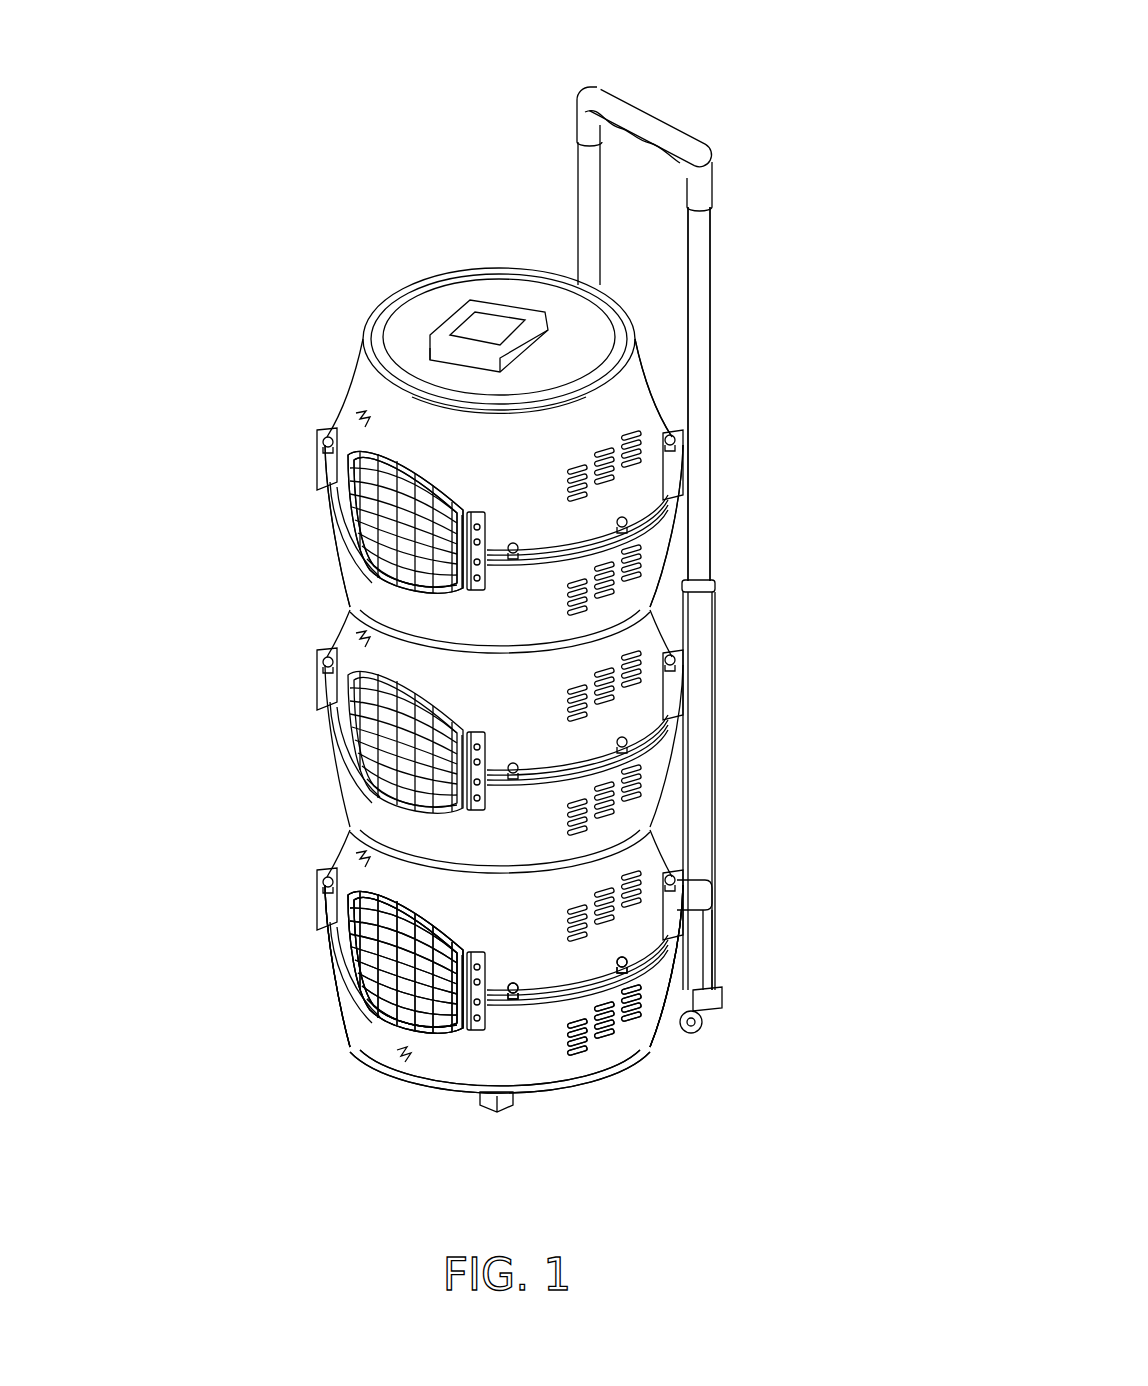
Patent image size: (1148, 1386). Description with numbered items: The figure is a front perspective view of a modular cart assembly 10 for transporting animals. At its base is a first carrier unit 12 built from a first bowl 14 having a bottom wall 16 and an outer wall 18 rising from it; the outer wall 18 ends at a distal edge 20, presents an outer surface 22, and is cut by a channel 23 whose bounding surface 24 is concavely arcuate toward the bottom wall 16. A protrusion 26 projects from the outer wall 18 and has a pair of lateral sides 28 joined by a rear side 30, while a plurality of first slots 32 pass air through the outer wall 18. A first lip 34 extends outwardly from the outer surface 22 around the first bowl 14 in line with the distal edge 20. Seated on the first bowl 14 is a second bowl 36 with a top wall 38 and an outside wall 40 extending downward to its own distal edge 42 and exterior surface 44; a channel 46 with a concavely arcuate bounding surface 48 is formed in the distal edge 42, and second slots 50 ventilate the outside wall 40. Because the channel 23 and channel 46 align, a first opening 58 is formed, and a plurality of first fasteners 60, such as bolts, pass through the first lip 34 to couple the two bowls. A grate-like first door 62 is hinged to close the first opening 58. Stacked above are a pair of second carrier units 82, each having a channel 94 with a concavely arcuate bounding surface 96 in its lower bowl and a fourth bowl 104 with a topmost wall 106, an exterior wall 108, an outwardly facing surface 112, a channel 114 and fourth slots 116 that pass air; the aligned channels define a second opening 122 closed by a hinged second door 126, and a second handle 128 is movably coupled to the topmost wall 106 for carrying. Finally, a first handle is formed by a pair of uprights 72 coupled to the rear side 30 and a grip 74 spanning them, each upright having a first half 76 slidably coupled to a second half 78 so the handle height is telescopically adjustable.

The modular cart assembly 10 is at (210, 366).
The first carrier unit 12 is at (326, 1026).
The first bowl 14 is at (457, 1073).
The bottom wall 16 is at (560, 1012).
The outer wall 18 is at (540, 1052).
The distal edge 20 is at (483, 1027).
The outer surface 22 is at (403, 1060).
The channel 23 is at (377, 1013).
The bounding surface 24 is at (357, 997).
The protrusion 26 is at (703, 932).
The lateral sides 28 is at (692, 1008).
The rear side 30 is at (698, 918).
The first slots 32 is at (617, 1030).
The first lip 34 is at (627, 1033).
The second bowl 36 is at (350, 838).
The top wall 38 is at (375, 812).
The outside wall 40 is at (633, 849).
The distal edge 42 is at (520, 1027).
The exterior surface 44 is at (322, 900).
The channel 46 is at (353, 975).
The bounding surface 48 is at (345, 950).
The second slots 50 is at (645, 886).
The first opening 58 is at (437, 1028).
The first fasteners 60 is at (676, 890).
The first door 62 is at (400, 1022).
The uprights 72 is at (712, 262).
The grip 74 is at (642, 103).
The first half 76 is at (727, 686).
The second half 78 is at (722, 468).
The second carrier units 82 is at (292, 709).
The channel 94 is at (366, 565).
The bounding surface 96 is at (388, 568).
The fourth bowl 104 is at (373, 393).
The topmost wall 106 is at (440, 303).
The exterior wall 108 is at (637, 400).
The outwardly facing surface 112 is at (362, 418).
The channel 114 is at (407, 467).
The fourth slots 116 is at (653, 460).
The second opening 122 is at (411, 580).
The second door 126 is at (447, 713).
The second handle 128 is at (530, 305).